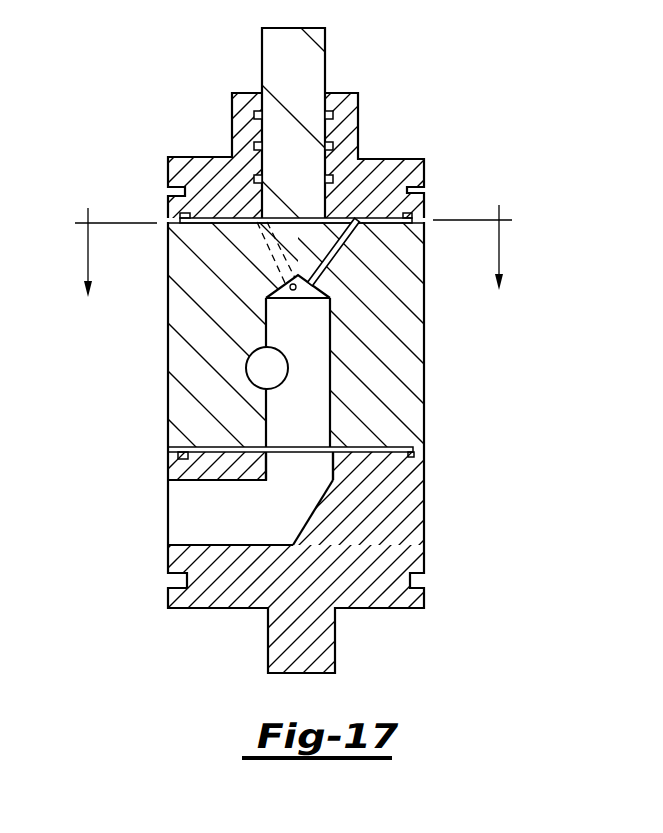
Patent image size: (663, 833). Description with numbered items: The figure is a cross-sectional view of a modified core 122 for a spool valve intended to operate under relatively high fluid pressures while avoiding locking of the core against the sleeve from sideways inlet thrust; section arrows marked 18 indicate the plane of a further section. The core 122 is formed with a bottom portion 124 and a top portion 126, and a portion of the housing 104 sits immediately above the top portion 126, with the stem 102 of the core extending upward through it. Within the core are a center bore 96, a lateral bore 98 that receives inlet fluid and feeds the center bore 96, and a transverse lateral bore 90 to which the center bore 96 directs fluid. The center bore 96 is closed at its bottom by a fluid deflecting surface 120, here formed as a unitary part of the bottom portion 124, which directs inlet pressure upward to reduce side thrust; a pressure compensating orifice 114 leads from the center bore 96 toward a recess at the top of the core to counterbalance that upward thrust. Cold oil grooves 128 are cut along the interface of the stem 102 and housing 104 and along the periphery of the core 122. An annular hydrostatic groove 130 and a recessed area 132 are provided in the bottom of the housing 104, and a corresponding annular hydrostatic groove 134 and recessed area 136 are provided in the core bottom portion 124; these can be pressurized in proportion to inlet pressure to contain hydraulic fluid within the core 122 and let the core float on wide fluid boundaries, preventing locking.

The section line 18- 18 is at (299, 266).
The transverse lateral bore 90 is at (247, 374).
The center bore 96 is at (325, 413).
The lateral bore 98 is at (195, 545).
The stem 102 is at (327, 53).
The housing 104 is at (380, 158).
The pressure compensating orifice 114 is at (347, 232).
The fluid deflecting surface 120 is at (315, 511).
The core 122 is at (150, 430).
The core bottom portion 124 is at (428, 552).
The core top portion 126 is at (424, 333).
The cold oil grooves 128 is at (232, 140).
The annular hydrostatic groove 130 is at (410, 217).
The recessed area 132 is at (217, 226).
The annular hydrostatic groove 134 is at (397, 465).
The recessed area 136 is at (378, 447).